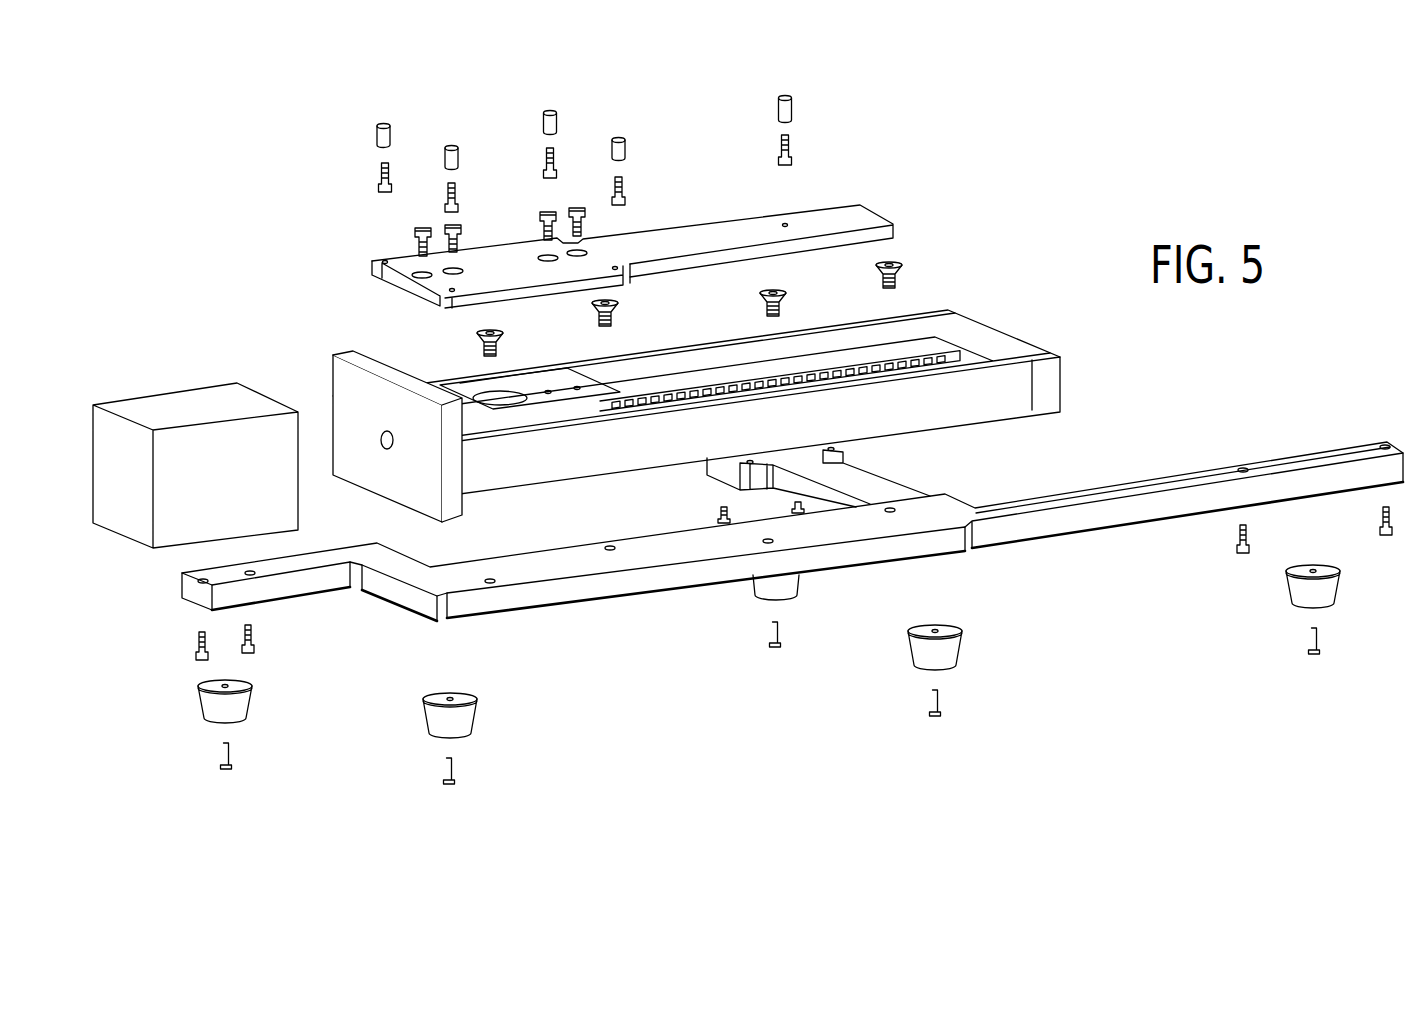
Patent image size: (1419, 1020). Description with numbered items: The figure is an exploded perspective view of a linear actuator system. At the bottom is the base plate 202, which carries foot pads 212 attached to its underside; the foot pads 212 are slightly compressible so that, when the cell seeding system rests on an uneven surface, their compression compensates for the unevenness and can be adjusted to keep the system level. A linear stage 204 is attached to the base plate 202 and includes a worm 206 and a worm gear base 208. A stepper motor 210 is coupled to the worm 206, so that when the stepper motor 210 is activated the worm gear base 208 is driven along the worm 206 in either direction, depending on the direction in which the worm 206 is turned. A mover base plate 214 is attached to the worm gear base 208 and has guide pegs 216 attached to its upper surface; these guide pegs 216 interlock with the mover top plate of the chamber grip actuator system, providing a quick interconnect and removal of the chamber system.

The base plate 202 is at (658, 578).
The linear stage 204 is at (977, 407).
The worm 206 is at (891, 358).
The worm gear base 208 is at (530, 387).
The stepper motor 210 is at (192, 397).
The foot pads 212 is at (238, 700).
The mover base plate 214 is at (820, 215).
The guide pegs 216 is at (390, 137).